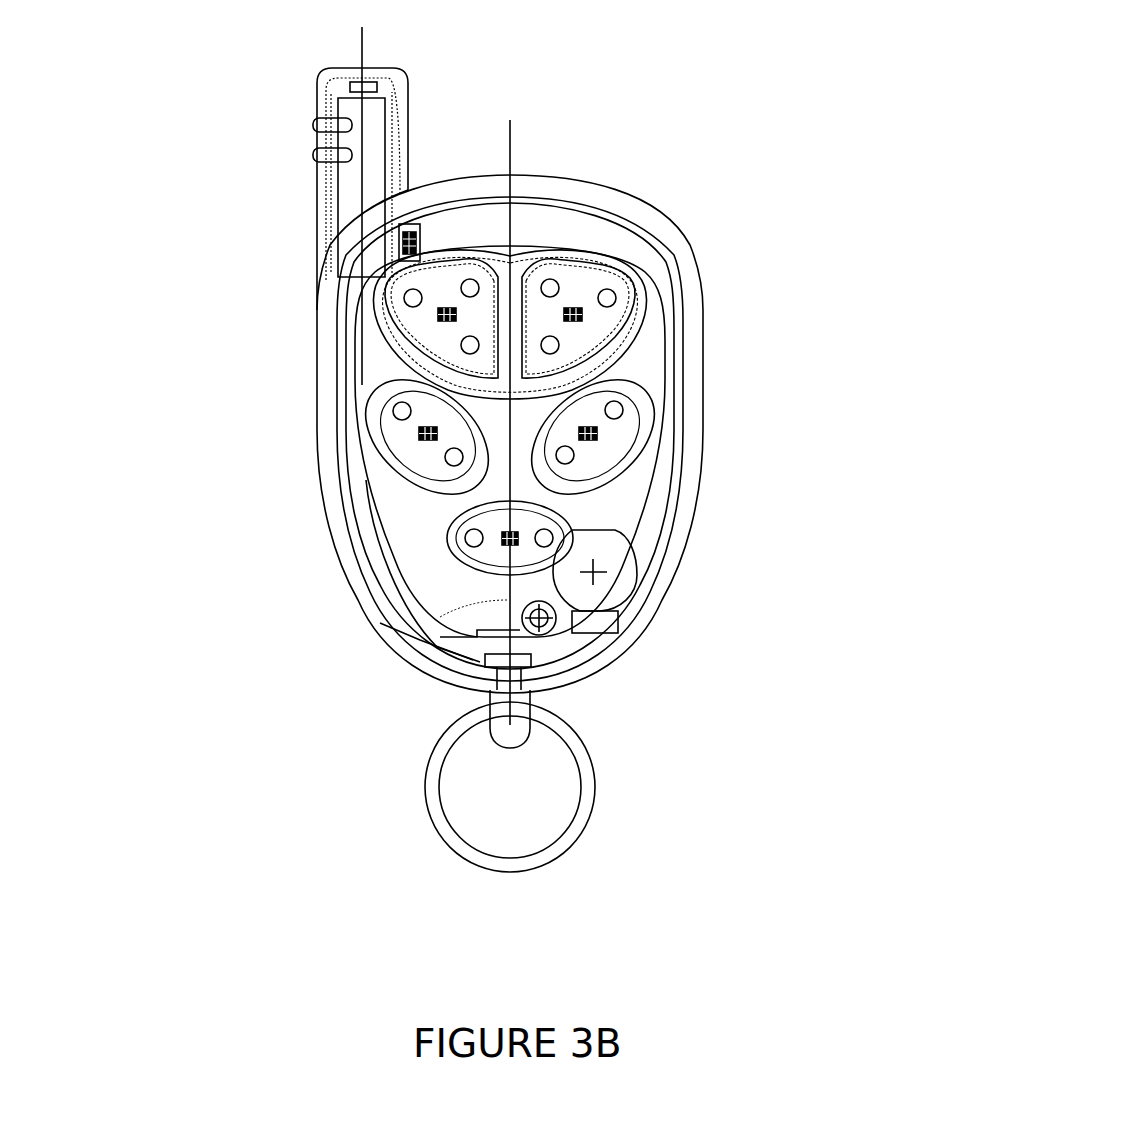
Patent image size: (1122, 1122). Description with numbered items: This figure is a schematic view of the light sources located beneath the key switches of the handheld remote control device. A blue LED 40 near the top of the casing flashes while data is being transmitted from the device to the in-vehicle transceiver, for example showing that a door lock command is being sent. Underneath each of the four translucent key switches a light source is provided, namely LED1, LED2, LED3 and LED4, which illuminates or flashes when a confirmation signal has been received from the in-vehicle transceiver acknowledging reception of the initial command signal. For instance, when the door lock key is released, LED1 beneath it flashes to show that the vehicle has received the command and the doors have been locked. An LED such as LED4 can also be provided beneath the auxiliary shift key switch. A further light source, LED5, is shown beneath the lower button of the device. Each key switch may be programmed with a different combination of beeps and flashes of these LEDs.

The light source beneath door lock key switch LED1 is at (432, 311).
The light source beneath door unlock key switch LED2 is at (588, 311).
The light source beneath trunk key switch LED3 is at (418, 444).
The light source beneath engine start/stop or auxiliary key switch LED4 is at (607, 437).
The fifth LED indicator (bottom button) LED5 is at (523, 545).
The blue LED LED 40 is at (430, 233).